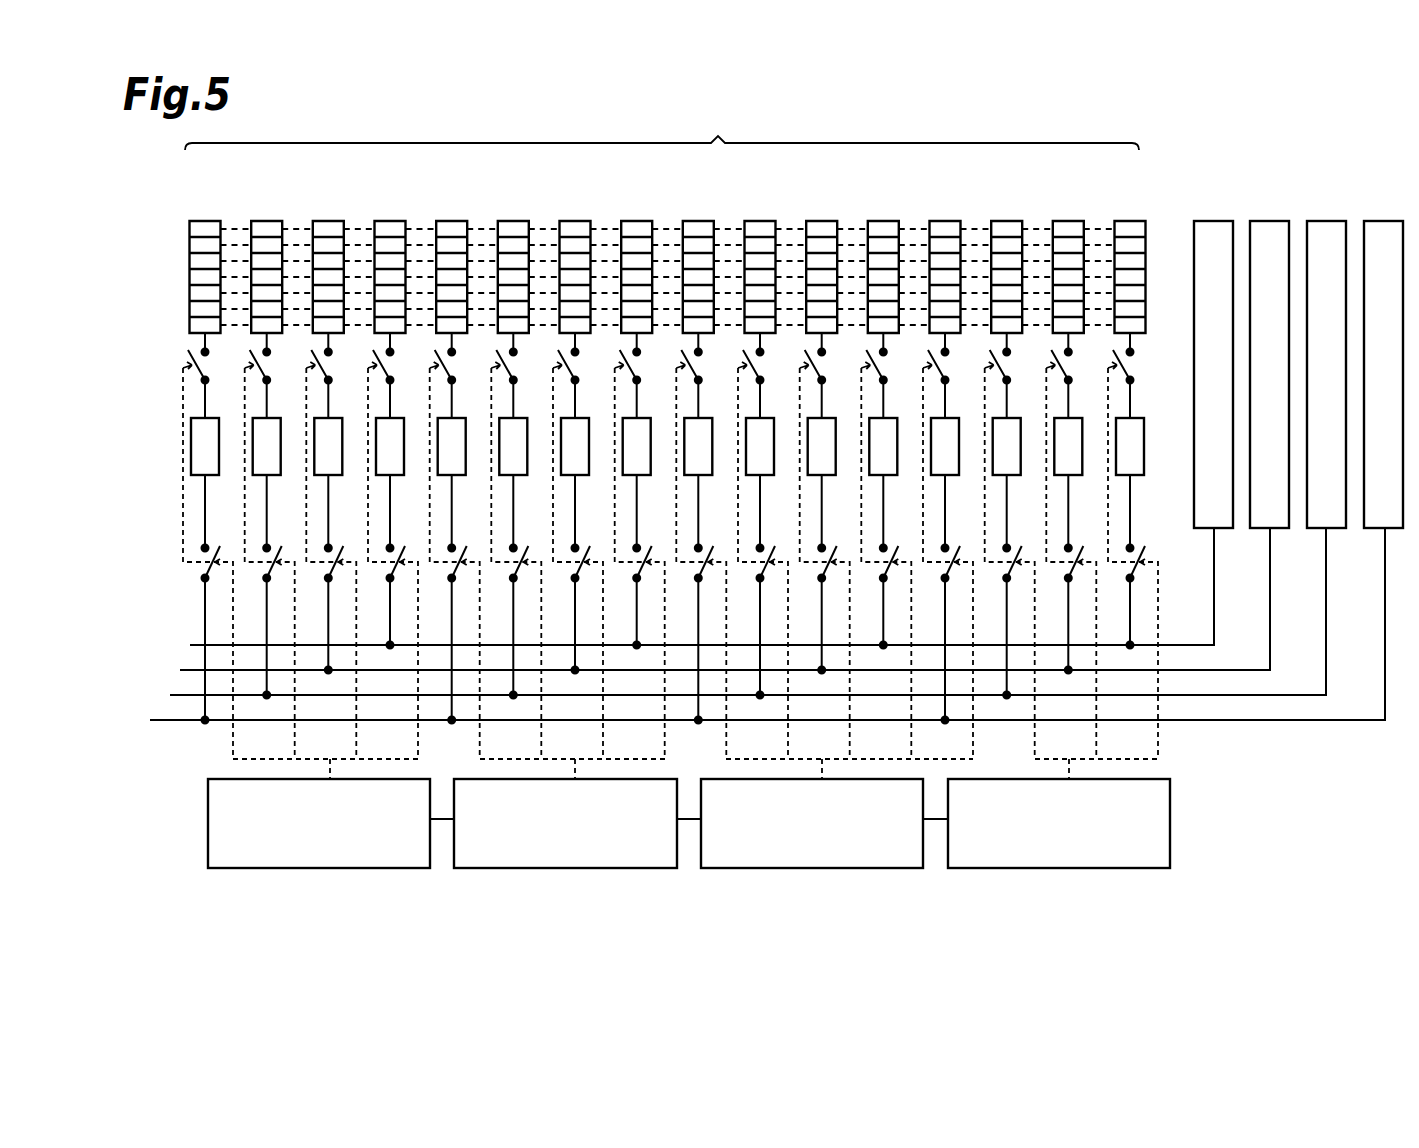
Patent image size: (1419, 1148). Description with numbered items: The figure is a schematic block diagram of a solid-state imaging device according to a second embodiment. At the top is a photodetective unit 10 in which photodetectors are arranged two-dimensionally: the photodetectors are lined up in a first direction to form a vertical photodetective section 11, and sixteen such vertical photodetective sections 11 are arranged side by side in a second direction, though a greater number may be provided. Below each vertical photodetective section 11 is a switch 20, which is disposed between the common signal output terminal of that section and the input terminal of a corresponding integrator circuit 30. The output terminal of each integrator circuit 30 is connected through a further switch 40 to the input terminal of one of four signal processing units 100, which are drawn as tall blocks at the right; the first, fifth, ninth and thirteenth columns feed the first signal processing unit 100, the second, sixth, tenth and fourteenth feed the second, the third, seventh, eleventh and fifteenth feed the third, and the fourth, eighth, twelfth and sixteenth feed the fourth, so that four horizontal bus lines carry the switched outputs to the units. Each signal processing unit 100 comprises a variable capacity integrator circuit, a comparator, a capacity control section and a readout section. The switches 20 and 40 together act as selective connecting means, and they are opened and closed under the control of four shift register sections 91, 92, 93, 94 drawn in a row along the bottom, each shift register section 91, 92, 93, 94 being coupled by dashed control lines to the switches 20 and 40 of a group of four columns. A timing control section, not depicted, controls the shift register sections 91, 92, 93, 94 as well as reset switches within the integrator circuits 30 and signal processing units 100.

The photodetective unit 10 is at (662, 128).
The vertical photodetective section 11 is at (1124, 220).
The switch 20 is at (1140, 397).
The integrator circuit 30 is at (1142, 498).
The switch 40 is at (1142, 596).
The signal processing unit 100 is at (1383, 220).
The shift register section 91 is at (1055, 869).
The shift register section 92 is at (808, 869).
The shift register section 93 is at (561, 869).
The shift register section 94 is at (314, 869).